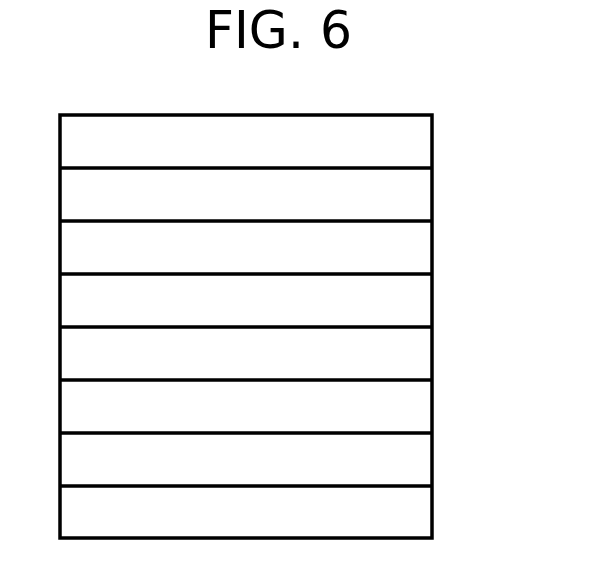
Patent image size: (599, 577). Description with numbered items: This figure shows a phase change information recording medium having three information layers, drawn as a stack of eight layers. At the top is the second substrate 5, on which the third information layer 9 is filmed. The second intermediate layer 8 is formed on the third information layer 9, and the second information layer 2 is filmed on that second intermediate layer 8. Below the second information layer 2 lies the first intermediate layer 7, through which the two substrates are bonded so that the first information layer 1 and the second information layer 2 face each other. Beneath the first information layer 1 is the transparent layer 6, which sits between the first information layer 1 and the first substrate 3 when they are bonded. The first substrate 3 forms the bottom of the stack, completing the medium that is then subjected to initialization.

The second substrate 5 is at (417, 150).
The third information layer 9 is at (417, 203).
The second intermediate layer 8 is at (417, 256).
The second information layer 2 is at (417, 309).
The first intermediate layer 7 is at (417, 362).
The first information layer 1 is at (417, 415).
The transparent layer 6 is at (417, 467).
The first substrate 3 is at (417, 520).